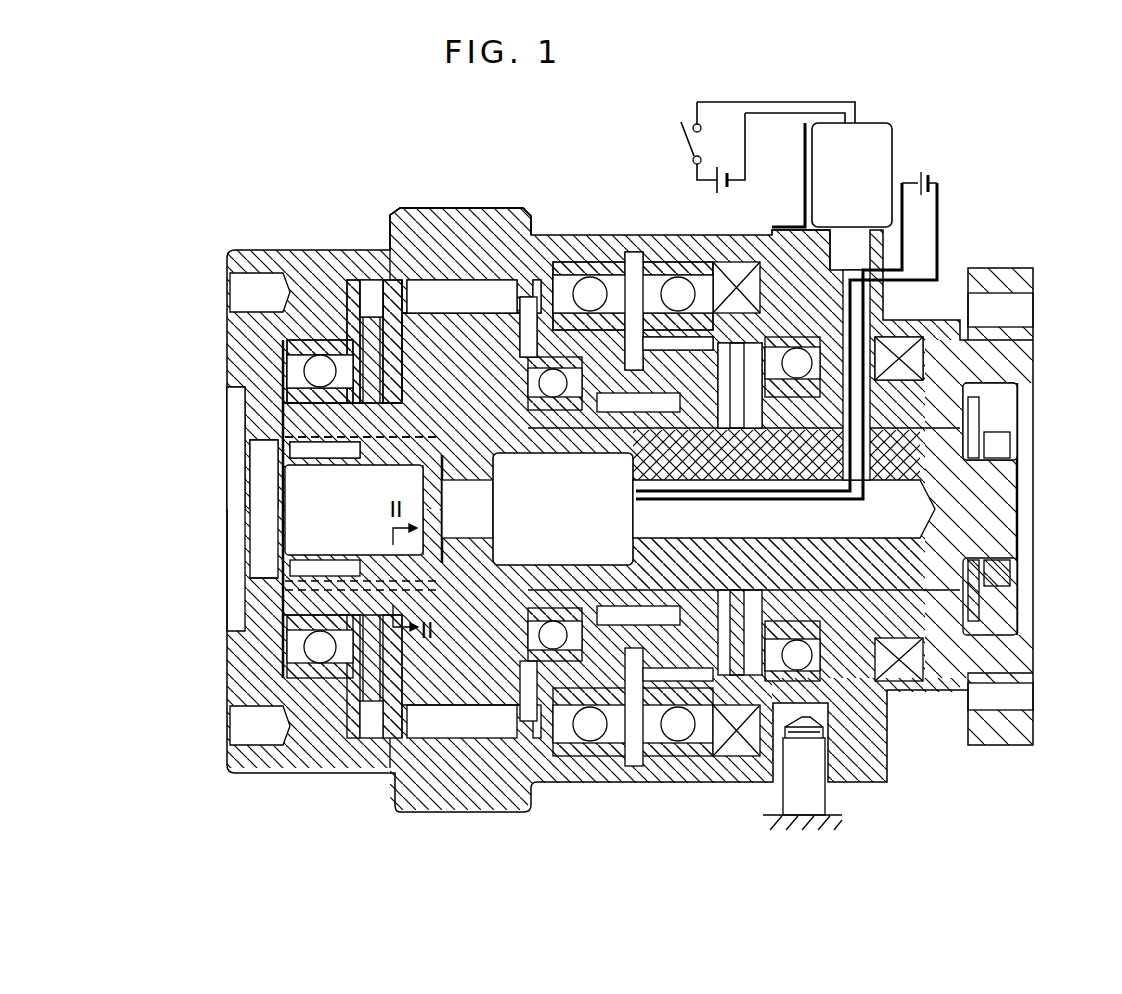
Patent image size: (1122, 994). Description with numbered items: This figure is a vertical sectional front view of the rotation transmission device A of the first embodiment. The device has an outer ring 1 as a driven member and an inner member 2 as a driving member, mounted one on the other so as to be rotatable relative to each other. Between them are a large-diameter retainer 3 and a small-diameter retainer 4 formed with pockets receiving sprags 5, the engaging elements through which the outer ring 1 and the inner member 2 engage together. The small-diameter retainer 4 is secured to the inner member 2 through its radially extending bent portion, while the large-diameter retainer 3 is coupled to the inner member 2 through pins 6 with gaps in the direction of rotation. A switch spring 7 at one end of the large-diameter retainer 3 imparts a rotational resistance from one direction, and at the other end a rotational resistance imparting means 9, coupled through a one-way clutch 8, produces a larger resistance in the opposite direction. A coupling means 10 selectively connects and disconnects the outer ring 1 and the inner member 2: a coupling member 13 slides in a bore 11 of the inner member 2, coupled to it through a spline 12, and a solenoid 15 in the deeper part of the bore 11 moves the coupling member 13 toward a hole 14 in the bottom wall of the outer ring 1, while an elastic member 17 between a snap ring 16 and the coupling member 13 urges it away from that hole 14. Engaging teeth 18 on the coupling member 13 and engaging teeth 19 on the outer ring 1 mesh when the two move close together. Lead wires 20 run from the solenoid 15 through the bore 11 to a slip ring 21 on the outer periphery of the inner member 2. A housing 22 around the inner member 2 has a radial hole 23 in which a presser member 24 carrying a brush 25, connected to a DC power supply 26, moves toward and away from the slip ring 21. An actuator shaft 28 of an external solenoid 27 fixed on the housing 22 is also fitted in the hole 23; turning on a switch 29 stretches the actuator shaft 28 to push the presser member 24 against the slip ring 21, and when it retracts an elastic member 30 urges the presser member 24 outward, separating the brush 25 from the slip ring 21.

The outer ring 1 is at (425, 233).
The inner member 2 is at (484, 336).
The large-diameter retainer 3 is at (541, 316).
The small-diameter retainer 4 is at (386, 283).
The sprags 5 is at (452, 290).
The pins 6 is at (364, 336).
The switch spring 7 is at (303, 335).
The one-way clutch 8 is at (636, 286).
The rotational resistance imparting means 9 is at (749, 340).
The coupling means 10 is at (476, 548).
The bore 11 is at (346, 413).
The spline 12 is at (463, 592).
The coupling member 13 is at (443, 600).
The hole 14 is at (262, 495).
The solenoid 15 is at (575, 520).
The snap ring 16 is at (312, 432).
The elastic member 17 is at (320, 468).
The engaging teeth 18 is at (240, 611).
The engaging teeth 19 is at (270, 580).
The lead wires 20 is at (846, 516).
The slip ring 21 is at (992, 412).
The housing 22 is at (820, 288).
The radial hole 23 is at (874, 250).
The presser member 24 is at (868, 318).
The brush 25 is at (927, 360).
The DC power supply 26 is at (926, 174).
The external solenoid 27 is at (877, 150).
The actuator shaft 28 is at (912, 213).
The switch 29 is at (688, 142).
The elastic member 30 is at (790, 258).
The rotation transmission device A is at (613, 206).